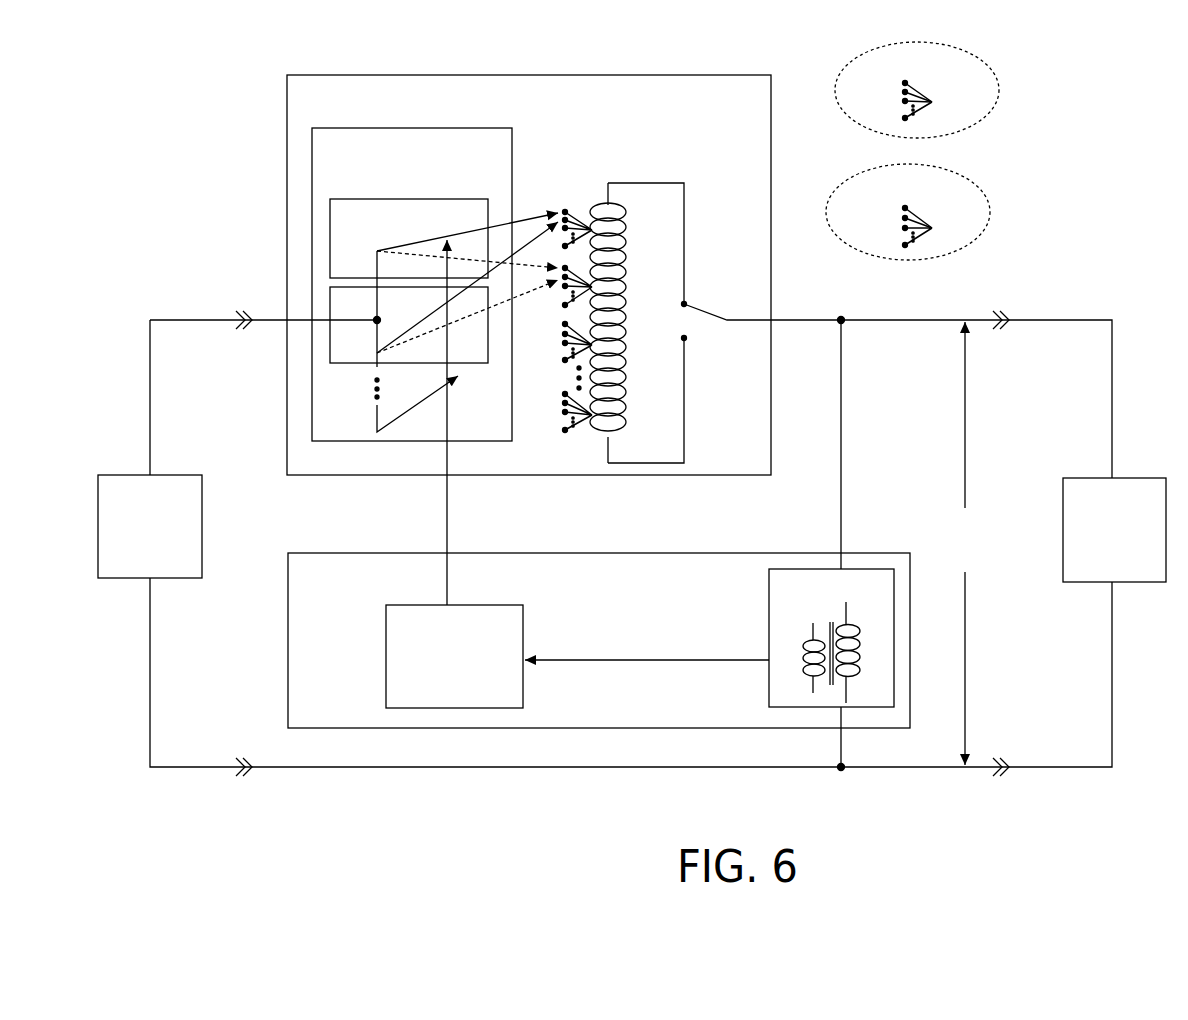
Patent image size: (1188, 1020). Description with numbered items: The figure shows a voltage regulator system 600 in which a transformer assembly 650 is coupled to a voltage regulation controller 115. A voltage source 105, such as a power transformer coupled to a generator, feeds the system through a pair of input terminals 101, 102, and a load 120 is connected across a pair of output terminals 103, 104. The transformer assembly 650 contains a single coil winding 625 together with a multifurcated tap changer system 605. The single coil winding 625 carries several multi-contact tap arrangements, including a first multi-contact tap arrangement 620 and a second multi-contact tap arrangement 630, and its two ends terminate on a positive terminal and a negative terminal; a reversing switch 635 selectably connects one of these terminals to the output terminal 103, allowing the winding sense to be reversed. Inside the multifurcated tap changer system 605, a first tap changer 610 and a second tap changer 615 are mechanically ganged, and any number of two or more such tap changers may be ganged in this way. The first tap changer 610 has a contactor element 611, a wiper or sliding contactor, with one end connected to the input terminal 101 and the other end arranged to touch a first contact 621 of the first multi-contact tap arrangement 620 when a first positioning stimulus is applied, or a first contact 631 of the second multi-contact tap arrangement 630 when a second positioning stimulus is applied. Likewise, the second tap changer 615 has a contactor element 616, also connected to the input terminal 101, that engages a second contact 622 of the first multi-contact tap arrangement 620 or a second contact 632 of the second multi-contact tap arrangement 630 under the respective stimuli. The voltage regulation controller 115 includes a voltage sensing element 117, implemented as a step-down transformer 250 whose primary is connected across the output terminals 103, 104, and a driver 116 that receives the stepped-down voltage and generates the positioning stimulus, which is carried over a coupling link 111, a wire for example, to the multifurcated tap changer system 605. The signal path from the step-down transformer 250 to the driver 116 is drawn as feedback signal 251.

The voltage regulator system 600 is at (1138, 177).
The transformer assembly 650 is at (643, 258).
The multifurcated tap changer system 605 is at (435, 284).
The first tap changer 610 is at (409, 238).
The contactor element 611 is at (425, 227).
The second tap changer 615 is at (409, 325).
The contactor element 616 is at (420, 341).
The first multi-contact tap arrangement 620 is at (766, 237).
The first contact 621 is at (903, 83).
The second contact 622 is at (903, 92).
The single coil winding 625 is at (641, 237).
The second multi-contact tap arrangement 630 is at (755, 249).
The first contact 631 is at (903, 208).
The second contact 632 is at (903, 218).
The reversing switch 635 is at (691, 306).
The input terminal 101 is at (243, 298).
The input terminal 102 is at (242, 786).
The output terminal 103 is at (996, 300).
The output terminal 104 is at (993, 791).
The voltage source 105 is at (150, 526).
The coupling link 111 is at (453, 522).
The voltage regulation controller 115 is at (599, 640).
The driver 116 is at (454, 656).
The voltage sensing element 117 is at (831, 638).
The load 120 is at (1114, 530).
The step-down transformer 250 is at (794, 642).
The feedback signal 251 is at (650, 660).